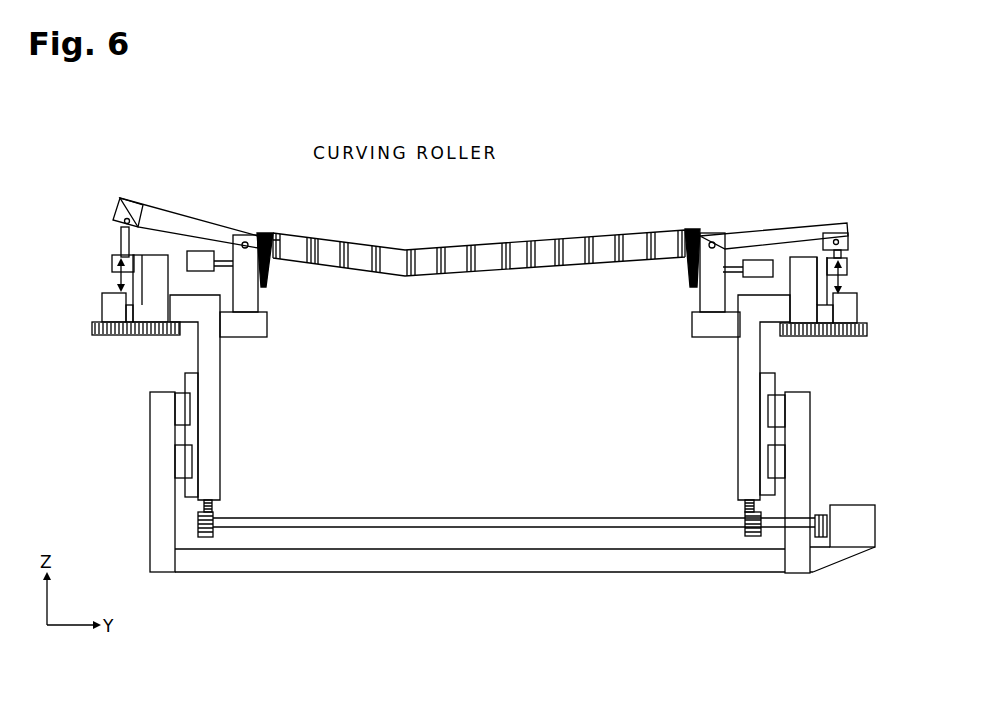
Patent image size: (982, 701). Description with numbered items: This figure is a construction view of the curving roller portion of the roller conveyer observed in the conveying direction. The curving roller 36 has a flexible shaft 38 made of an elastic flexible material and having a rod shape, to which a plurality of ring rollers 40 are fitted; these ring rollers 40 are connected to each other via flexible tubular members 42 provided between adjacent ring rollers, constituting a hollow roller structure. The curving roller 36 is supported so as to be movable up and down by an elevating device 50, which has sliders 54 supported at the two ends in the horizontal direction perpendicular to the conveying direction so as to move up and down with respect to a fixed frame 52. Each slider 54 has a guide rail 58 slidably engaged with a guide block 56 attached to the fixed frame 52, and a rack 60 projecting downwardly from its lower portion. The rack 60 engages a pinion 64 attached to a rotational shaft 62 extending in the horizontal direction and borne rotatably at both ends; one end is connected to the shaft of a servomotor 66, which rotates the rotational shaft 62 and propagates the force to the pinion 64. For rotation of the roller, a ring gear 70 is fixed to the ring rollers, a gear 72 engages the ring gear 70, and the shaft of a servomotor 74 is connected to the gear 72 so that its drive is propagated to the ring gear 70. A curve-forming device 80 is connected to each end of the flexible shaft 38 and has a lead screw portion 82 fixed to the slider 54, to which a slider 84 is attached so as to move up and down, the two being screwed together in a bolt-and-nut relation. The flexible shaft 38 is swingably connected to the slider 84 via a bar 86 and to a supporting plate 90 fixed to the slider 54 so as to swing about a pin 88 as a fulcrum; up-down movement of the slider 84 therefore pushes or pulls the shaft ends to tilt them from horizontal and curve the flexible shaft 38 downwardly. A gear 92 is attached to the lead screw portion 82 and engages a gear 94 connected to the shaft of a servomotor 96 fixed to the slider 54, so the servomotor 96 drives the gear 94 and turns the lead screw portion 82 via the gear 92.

The curving roller 36 is at (418, 234).
The flexible shaft 38 is at (186, 216).
The ring roller 40 is at (360, 275).
The flexible tubular member 42 is at (402, 278).
The elevating device 50 is at (635, 585).
The fixed frame 52 is at (456, 573).
The slider 54 is at (213, 431).
The guide block 56 is at (178, 408).
The guide rail 58 is at (193, 385).
The rack 60 is at (212, 505).
The rotational shaft 62 is at (478, 517).
The pinion 64 is at (203, 537).
The servomotor 66 is at (852, 513).
The ring gear 70 is at (277, 262).
The gear 72 is at (263, 282).
The servomotor 74 is at (201, 252).
The curve-forming device 80 is at (78, 340).
The lead screw portion 82 is at (157, 256).
The slider 84 is at (112, 263).
The bar 86 is at (120, 241).
The pin 88 is at (245, 242).
The supporting plate 90 is at (255, 304).
The gear 92 is at (155, 336).
The gear 94 is at (108, 336).
The servomotor 96 is at (102, 302).